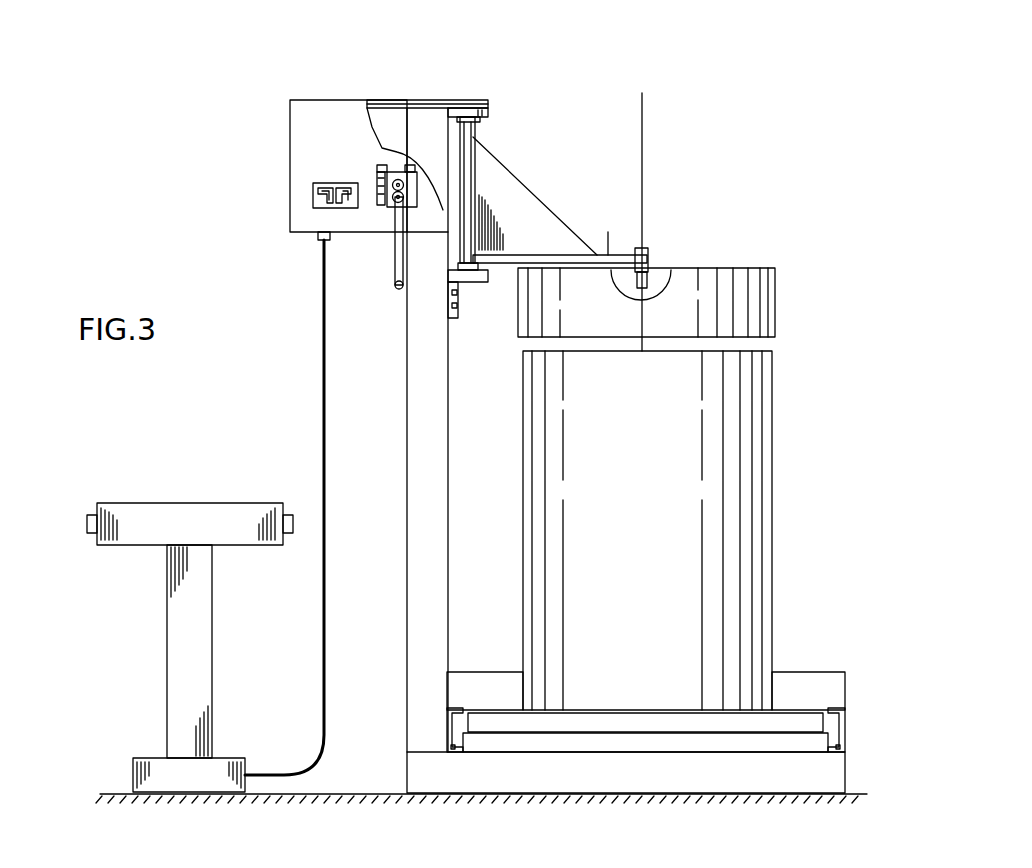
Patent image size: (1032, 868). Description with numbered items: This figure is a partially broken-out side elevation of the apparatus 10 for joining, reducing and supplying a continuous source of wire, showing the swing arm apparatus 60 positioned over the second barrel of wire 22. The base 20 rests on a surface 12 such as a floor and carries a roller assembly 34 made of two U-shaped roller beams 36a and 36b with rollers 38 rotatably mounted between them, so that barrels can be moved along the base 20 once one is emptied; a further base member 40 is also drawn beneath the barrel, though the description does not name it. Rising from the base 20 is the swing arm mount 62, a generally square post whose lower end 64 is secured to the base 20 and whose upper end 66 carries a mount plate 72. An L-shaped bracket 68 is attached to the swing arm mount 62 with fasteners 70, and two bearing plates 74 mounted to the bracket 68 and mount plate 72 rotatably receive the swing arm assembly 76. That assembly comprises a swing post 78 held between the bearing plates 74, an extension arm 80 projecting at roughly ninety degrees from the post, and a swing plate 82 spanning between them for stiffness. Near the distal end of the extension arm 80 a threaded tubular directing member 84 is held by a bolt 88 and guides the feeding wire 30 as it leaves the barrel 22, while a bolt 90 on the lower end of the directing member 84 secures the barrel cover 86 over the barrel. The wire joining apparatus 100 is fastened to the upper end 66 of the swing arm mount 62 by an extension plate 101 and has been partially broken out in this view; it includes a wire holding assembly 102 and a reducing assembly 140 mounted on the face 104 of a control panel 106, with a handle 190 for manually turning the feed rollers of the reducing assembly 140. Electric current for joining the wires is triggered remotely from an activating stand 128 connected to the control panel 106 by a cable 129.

The apparatus 10 is at (137, 103).
The surface 12 is at (110, 790).
The base 20 is at (855, 778).
The barrel of wire 22 is at (770, 465).
The feeding wire 30 is at (643, 128).
The roller assembly 34 is at (847, 733).
The roller beam 36a is at (843, 715).
The roller beam 36b is at (450, 735).
The rollers 38 is at (493, 717).
The carriage platform 40 is at (793, 672).
The swing arm apparatus 60 is at (566, 102).
The swing arm mount 62 is at (400, 410).
The lower end 64 is at (406, 740).
The upper end 66 is at (387, 103).
The L-shaped bracket 68 is at (458, 287).
The fasteners 70 is at (458, 310).
The mount plate 72 is at (463, 103).
The bearing plates 74 is at (485, 112).
The swing arm assembly 76 is at (562, 195).
The swing post 78 is at (475, 170).
The extension arm 80 is at (608, 232).
The swing plate 82 is at (540, 232).
The directing member 84 is at (665, 258).
The barrel cover 86 is at (776, 300).
The bolt 88 is at (650, 255).
The bolt 90 is at (632, 285).
The wire joining apparatus 100 is at (277, 92).
The extension plate 101 is at (397, 140).
The wire holding assembly 102 is at (303, 197).
The face 104 is at (313, 128).
The control panel 106 is at (290, 143).
The activating stand 128 is at (118, 490).
The cable 129 is at (322, 455).
The reducing assembly 140 is at (367, 167).
The handle 190 is at (395, 255).